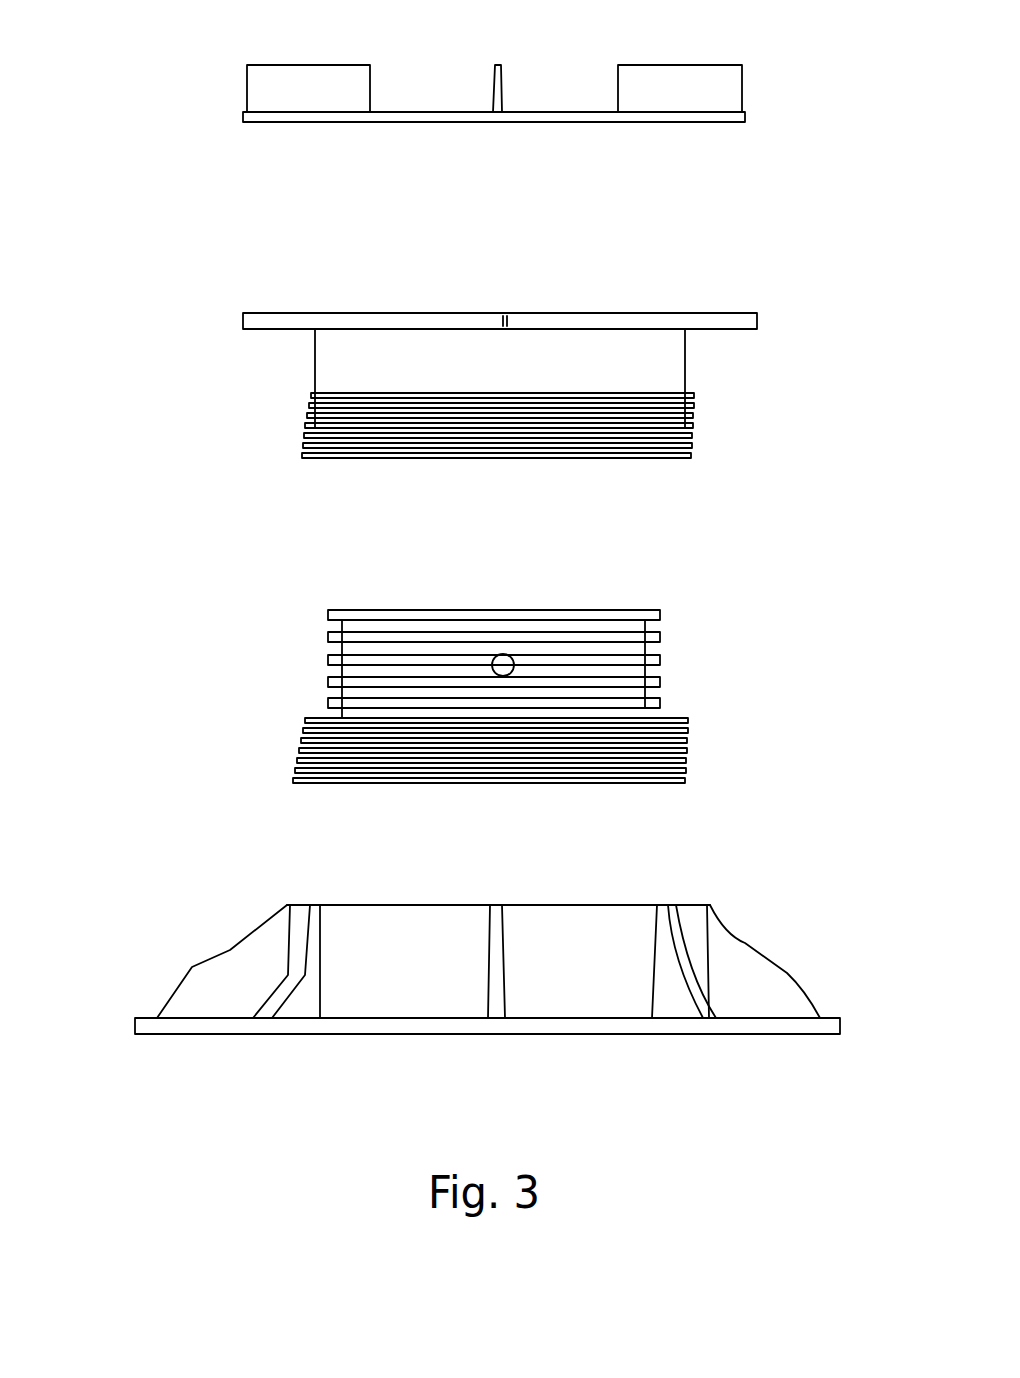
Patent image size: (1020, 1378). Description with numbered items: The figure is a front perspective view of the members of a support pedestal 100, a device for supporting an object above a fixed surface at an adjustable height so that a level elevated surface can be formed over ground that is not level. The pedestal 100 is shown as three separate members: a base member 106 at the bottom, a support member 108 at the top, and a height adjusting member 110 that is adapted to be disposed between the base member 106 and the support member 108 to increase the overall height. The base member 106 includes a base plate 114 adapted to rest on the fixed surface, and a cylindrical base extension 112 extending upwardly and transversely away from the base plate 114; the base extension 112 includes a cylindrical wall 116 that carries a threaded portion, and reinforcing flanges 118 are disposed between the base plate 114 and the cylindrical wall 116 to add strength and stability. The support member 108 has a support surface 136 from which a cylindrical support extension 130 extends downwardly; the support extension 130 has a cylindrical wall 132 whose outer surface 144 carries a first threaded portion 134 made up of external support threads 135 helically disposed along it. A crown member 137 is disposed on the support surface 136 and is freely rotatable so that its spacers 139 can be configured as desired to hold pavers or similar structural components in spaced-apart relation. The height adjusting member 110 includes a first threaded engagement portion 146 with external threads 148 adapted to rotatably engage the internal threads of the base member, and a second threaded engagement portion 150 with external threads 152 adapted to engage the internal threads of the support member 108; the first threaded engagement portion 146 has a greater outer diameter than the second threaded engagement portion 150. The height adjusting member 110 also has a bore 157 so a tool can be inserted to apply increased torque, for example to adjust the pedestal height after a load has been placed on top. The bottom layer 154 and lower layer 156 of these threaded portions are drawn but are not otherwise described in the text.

The support pedestal 100 is at (118, 298).
The base member 106 is at (510, 993).
The support member 108 is at (518, 361).
The height adjusting member 110 is at (540, 688).
The base extension 112 is at (590, 905).
The base plate 114 is at (780, 1028).
The cylindrical wall 116 is at (400, 975).
The reinforcing flanges 118 is at (232, 977).
The support extension 130 is at (400, 352).
The cylindrical wall 132 is at (652, 360).
The first threaded portion 134 is at (493, 435).
The external support threads 135 is at (534, 456).
The support surface 136 is at (650, 312).
The crown member 137 is at (584, 73).
The spacers 139 is at (680, 82).
The outer surface 144 is at (315, 368).
The first threaded engagement portion 146 is at (493, 772).
The external threads 148 is at (689, 762).
The second threaded engagement portion 150 is at (494, 633).
The external threads 152 is at (658, 640).
The bottom layer 154 is at (688, 769).
The lower layer of upper stack 156 is at (648, 712).
The bore 157 is at (513, 656).